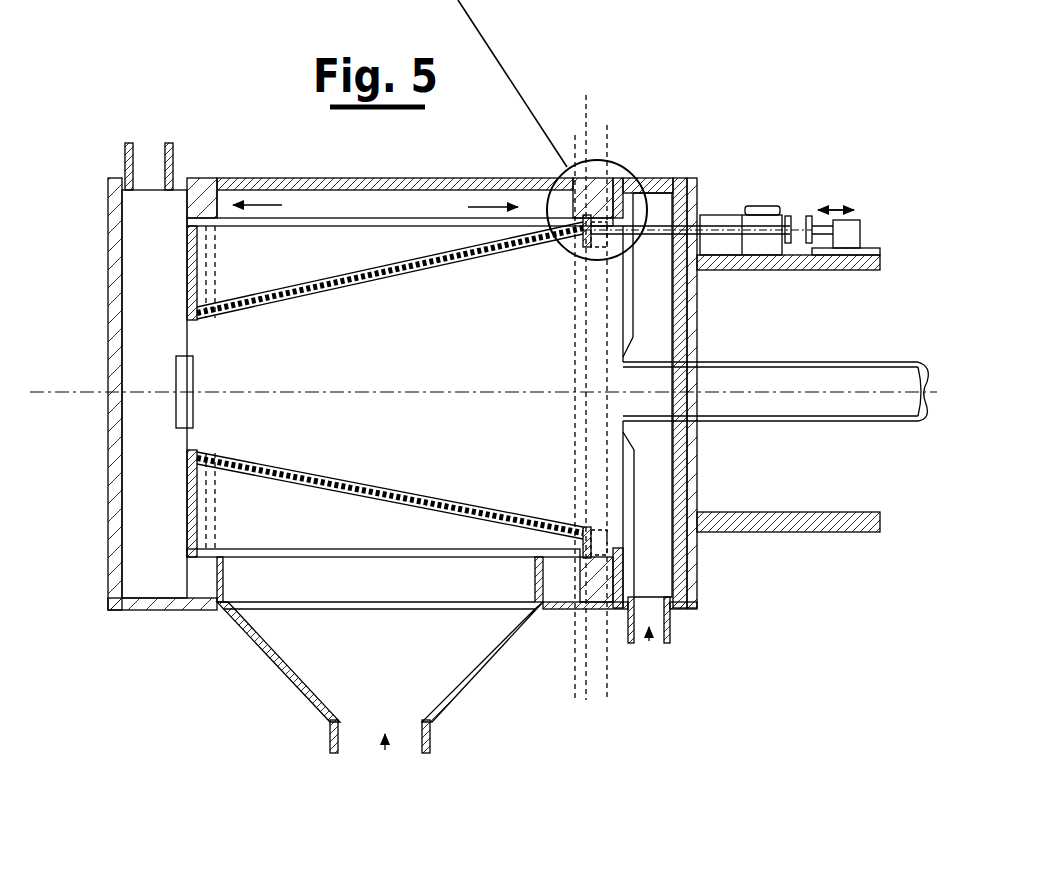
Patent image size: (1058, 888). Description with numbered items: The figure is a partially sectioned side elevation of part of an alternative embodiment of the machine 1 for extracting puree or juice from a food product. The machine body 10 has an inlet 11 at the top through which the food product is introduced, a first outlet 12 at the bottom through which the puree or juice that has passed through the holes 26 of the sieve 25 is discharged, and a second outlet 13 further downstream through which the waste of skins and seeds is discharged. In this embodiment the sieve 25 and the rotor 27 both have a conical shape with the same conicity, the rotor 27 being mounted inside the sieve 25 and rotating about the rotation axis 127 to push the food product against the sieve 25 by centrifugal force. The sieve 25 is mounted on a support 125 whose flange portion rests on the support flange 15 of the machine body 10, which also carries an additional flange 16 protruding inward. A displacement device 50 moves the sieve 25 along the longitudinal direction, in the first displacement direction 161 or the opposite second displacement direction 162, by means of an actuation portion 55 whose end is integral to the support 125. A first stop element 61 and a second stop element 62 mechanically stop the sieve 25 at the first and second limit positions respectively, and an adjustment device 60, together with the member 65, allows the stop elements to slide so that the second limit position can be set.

The machine 1 is at (830, 593).
The machine body 10 is at (312, 183).
The inlet 11 is at (143, 130).
The first outlet 12 is at (385, 735).
The second outlet 13 is at (649, 628).
The support flange 15 is at (576, 200).
The additional flange 16 is at (652, 212).
The sieve 25 is at (226, 478).
The holes 26 is at (438, 503).
The rotor 27 is at (178, 330).
The displacement device 50 is at (653, 97).
The actuation portion 55 is at (658, 218).
The adjustment device 60 is at (874, 221).
The first stop element 61 is at (791, 215).
The second stop element 62 is at (803, 216).
The guide block 65 is at (706, 215).
The support 125 is at (193, 515).
The rotation axis 127 is at (70, 392).
The first displacement direction 161 is at (262, 208).
The second displacement direction 162 is at (491, 205).